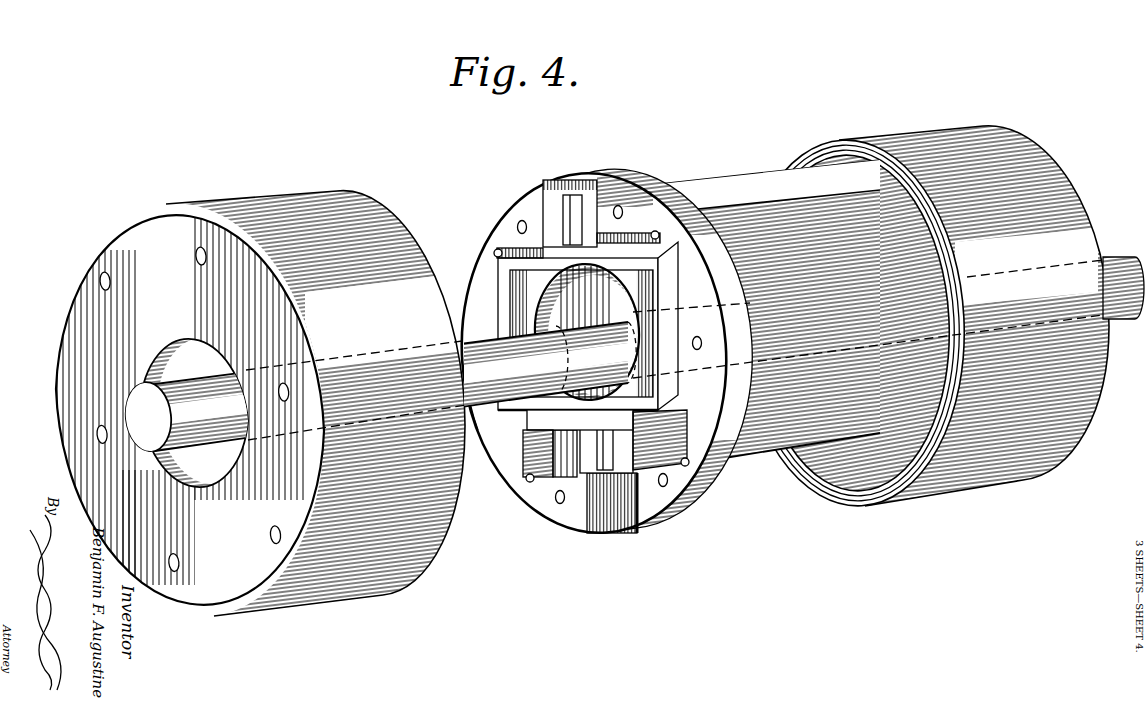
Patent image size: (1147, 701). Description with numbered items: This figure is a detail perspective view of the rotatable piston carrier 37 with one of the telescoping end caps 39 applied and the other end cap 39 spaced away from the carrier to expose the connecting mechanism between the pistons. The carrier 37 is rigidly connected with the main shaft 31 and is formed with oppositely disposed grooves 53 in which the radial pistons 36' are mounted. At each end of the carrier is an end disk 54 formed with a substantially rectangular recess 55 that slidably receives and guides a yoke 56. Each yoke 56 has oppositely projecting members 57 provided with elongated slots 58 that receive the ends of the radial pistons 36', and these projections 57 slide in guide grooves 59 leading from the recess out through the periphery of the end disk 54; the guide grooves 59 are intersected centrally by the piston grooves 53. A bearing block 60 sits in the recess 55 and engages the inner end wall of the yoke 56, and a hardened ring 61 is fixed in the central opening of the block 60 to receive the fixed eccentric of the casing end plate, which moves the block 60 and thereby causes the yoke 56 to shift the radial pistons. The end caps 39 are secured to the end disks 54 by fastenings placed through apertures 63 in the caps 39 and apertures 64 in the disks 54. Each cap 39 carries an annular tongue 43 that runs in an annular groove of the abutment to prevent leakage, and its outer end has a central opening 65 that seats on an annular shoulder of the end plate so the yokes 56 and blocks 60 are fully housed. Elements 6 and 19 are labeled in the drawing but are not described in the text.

The inner cylinder band 6 is at (797, 240).
The bearing 19 is at (470, 432).
The main shaft 31 is at (612, 357).
The radial pistons 36' is at (770, 294).
The rotatable piston carrier 37 is at (813, 436).
The end caps 39 is at (255, 203).
The annular tongue 43 is at (910, 473).
The grooves 53 is at (677, 551).
The end disk 54 is at (587, 448).
The recesses 55 is at (673, 463).
The yokes 56 is at (547, 423).
The oppositely projecting members 57 is at (548, 213).
The elongated slots 58 is at (567, 200).
The guide grooves 59 is at (547, 202).
The bearing block 60 is at (620, 263).
The hardened ring 61 is at (548, 293).
The apertures 63 is at (210, 264).
The apertures 64 is at (620, 208).
The central openings 65 is at (222, 478).